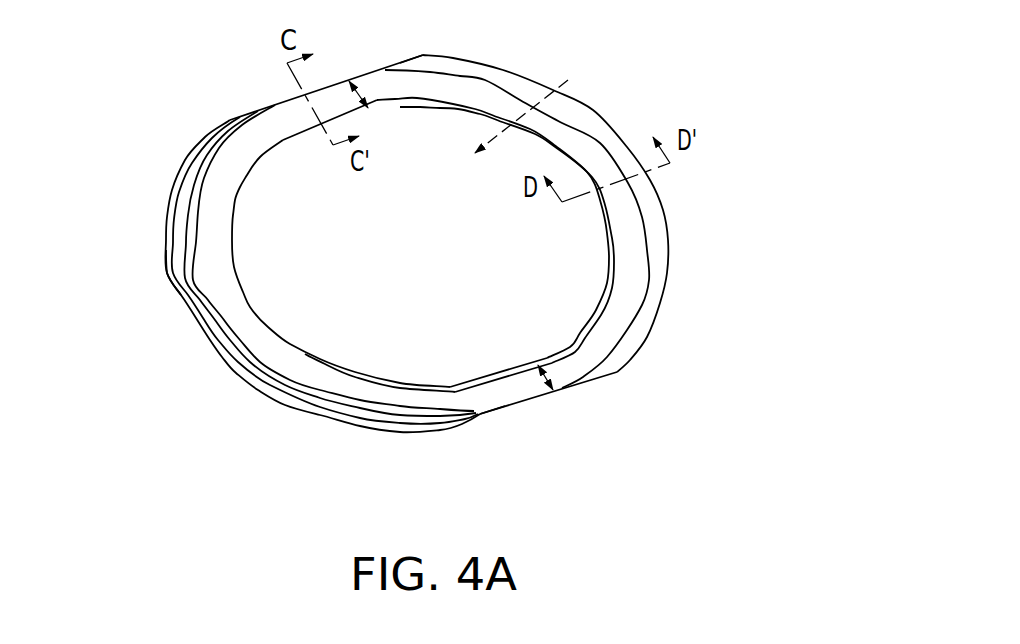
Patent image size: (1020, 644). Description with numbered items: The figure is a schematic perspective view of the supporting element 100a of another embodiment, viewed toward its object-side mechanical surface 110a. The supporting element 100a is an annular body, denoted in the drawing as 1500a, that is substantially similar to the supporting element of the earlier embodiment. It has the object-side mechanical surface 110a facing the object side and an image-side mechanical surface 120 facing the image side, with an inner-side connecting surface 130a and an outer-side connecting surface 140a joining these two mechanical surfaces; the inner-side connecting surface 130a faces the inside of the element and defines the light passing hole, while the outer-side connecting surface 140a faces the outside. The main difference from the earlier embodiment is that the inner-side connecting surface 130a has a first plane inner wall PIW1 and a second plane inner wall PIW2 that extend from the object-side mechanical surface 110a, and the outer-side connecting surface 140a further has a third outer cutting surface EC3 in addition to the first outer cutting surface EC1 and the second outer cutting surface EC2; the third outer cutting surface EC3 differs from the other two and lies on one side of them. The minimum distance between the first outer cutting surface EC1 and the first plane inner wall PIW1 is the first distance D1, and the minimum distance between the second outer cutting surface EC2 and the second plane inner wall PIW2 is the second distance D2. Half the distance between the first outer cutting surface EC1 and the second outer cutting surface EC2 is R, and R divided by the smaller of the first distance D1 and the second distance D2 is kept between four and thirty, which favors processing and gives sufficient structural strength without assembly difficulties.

The supporting element 100a is at (787, 498).
The object-side mechanical surface 110a is at (302, 115).
The image-side mechanical surface 120 is at (572, 363).
The inner-side connecting surface 130a is at (233, 255).
The outer-side connecting surface 140a is at (669, 243).
The annular body 1500a is at (561, 105).
The first plane inner wall PIW1 is at (383, 101).
The second plane inner wall PIW2 is at (521, 360).
The first distance D1 is at (356, 92).
The second distance D2 is at (565, 372).
The first outer cutting surface EC1 is at (343, 82).
The second outer cutting surface EC2 is at (491, 416).
The third outer cutting surface EC3 is at (200, 317).